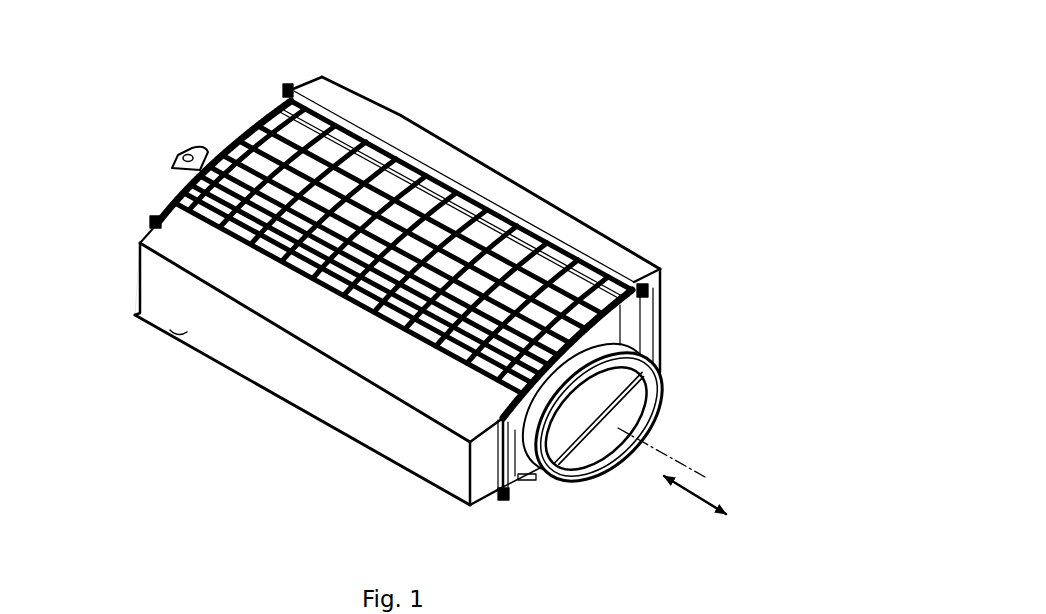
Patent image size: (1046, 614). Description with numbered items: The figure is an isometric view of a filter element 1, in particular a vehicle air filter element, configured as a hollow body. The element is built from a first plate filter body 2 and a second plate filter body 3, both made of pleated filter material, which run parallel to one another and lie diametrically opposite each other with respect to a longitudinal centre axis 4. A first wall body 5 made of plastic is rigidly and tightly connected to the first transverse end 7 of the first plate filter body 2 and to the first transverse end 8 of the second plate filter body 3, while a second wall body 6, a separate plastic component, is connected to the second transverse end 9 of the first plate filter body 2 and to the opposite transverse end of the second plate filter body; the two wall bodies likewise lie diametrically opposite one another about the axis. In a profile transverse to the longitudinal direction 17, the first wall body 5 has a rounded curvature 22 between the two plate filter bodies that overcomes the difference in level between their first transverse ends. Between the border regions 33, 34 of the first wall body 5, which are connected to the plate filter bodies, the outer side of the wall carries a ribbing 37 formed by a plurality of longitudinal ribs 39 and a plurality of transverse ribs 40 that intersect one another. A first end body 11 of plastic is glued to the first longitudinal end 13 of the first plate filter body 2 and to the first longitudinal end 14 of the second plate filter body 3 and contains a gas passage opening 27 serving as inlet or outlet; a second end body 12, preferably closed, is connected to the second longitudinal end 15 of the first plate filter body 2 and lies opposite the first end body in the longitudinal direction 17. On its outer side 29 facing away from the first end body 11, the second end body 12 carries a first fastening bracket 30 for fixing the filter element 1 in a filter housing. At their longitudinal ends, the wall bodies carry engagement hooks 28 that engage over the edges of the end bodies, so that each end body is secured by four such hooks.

The filter element 1 is at (668, 152).
The first plate filter body 2 is at (272, 360).
The second plate filter body 3 is at (663, 318).
The longitudinal centre axis 4 is at (704, 471).
The first wall body 5 is at (572, 220).
The second wall body 6 is at (318, 420).
The first transverse end 7 is at (216, 298).
The first transverse end 8 is at (455, 152).
The second transverse end 9 is at (180, 333).
The first end body 11 is at (660, 409).
The second end body 12 is at (250, 102).
The first longitudinal end 13 is at (485, 482).
The first longitudinal end 14 is at (650, 337).
The second longitudinal end 15 is at (140, 275).
The longitudinal direction 17 is at (694, 500).
The curvature 22 is at (430, 215).
The gas passage opening 27 is at (600, 468).
The engagement hooks 28 is at (288, 86).
The outer side 29 is at (232, 152).
The first fastening bracket 30 is at (182, 150).
The border region 33 is at (432, 400).
The border region 34 is at (397, 118).
The ribbing 37 is at (510, 233).
The longitudinal ribs 39 is at (327, 302).
The transverse ribs 40 is at (385, 303).